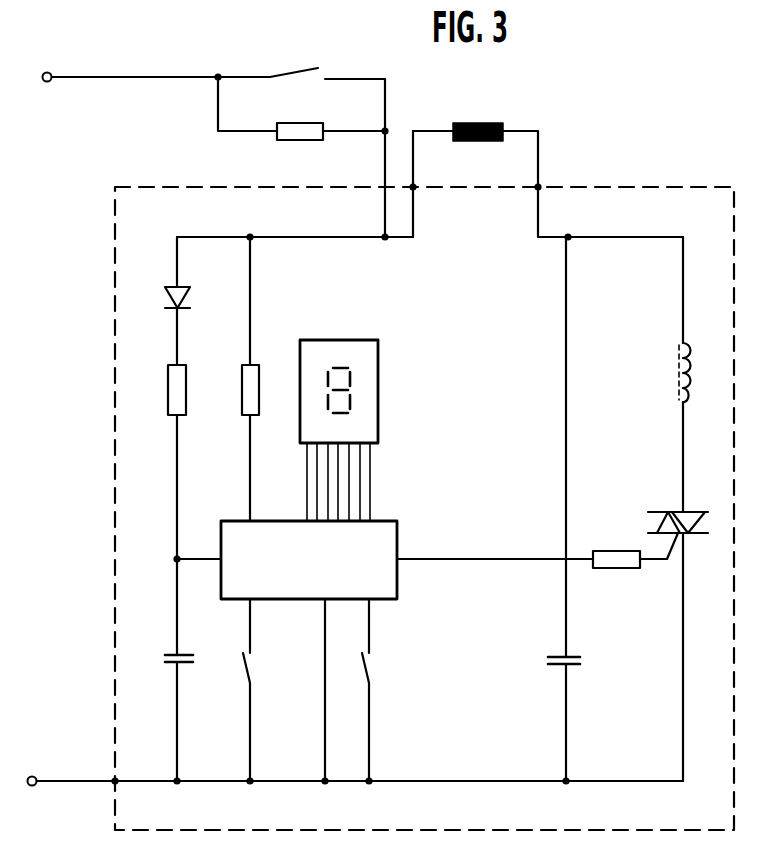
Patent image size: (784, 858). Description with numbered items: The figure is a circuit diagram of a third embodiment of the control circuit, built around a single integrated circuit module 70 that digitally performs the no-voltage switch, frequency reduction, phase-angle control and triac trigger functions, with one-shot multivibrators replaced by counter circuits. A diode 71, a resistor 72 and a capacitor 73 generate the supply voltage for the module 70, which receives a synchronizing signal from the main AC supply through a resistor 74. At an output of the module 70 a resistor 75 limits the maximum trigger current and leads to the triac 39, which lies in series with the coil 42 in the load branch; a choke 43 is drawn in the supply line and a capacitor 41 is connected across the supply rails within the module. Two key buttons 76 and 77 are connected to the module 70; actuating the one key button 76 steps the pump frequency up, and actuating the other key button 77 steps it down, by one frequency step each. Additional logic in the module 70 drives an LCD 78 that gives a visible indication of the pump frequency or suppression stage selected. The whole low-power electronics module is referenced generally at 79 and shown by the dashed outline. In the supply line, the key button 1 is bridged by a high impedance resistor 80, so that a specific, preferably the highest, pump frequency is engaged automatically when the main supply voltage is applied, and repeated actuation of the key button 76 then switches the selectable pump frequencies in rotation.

The key button 1 is at (322, 69).
The high impedance resistor 80 is at (292, 123).
The inductor / choke coil 43 is at (461, 121).
The diode 71 is at (186, 297).
The resistor 72 is at (186, 384).
The resistor 74 is at (278, 383).
The LCD (liquid crystal display) 78 is at (379, 381).
The IC module 70 is at (371, 506).
The relay coil / inductance 42 is at (692, 370).
The triac 39 is at (680, 512).
The resistor 75 is at (596, 552).
The capacitor 73 is at (181, 654).
The key button 76 is at (273, 680).
The key button 77 is at (370, 676).
The capacitor 41 is at (571, 655).
The electronics module 79 is at (128, 812).